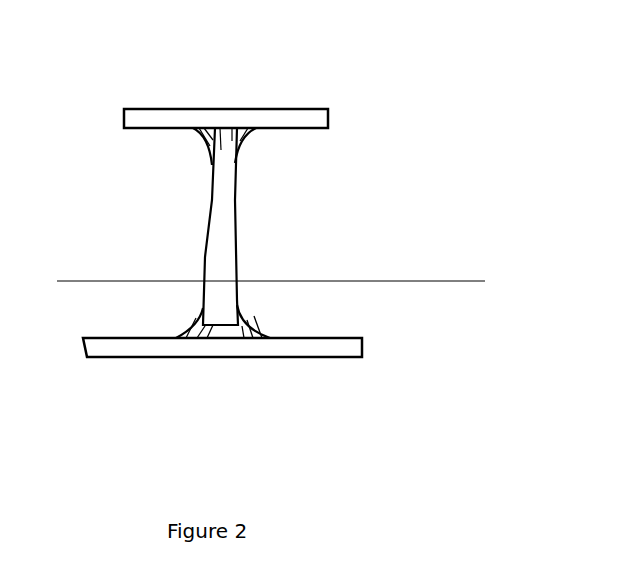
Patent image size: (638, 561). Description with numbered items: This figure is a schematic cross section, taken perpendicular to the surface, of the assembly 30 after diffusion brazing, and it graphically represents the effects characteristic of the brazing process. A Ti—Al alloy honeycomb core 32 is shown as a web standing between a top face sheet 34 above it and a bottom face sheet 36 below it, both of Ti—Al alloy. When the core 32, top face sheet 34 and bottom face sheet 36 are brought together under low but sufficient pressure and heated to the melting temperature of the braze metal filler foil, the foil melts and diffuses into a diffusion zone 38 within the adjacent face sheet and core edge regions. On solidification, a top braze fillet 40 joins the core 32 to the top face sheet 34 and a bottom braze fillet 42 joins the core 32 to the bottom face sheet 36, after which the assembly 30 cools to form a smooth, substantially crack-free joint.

The assembly 30 is at (337, 298).
The core 32 is at (243, 243).
The top face sheet 34 is at (222, 109).
The bottom face sheet 36 is at (225, 357).
The diffusion zone 38 is at (260, 128).
The top braze fillet 40 is at (198, 153).
The bottom braze fillet 42 is at (188, 323).